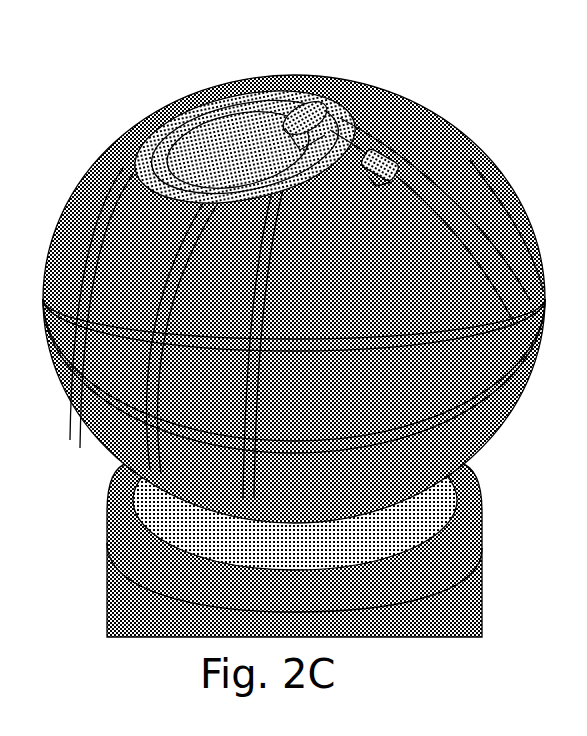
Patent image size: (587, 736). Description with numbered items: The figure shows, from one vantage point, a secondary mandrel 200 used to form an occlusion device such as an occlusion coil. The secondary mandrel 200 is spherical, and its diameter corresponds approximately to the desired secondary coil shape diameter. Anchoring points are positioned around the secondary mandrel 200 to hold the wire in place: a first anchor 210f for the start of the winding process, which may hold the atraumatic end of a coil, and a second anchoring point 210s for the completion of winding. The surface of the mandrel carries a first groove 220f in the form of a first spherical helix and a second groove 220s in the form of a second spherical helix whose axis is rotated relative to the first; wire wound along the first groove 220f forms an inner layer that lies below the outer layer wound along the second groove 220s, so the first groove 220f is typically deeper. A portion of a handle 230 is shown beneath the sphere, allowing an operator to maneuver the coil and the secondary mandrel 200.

The secondary mandrel 200 is at (302, 328).
The first anchor 210f is at (283, 112).
The second anchoring point 210s is at (385, 176).
The first groove 220f is at (266, 185).
The second groove 220s is at (183, 260).
The handle 230 is at (480, 577).